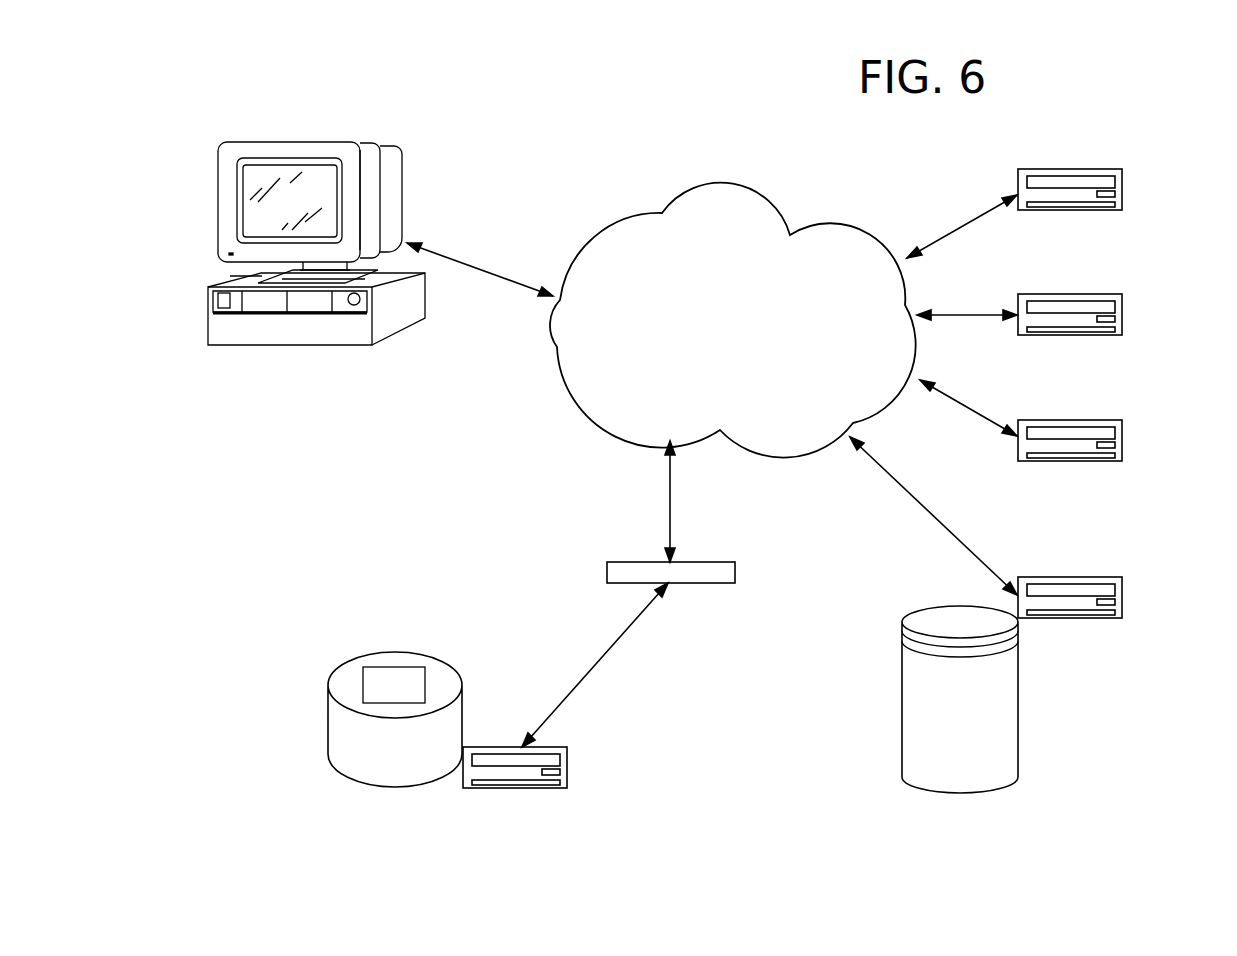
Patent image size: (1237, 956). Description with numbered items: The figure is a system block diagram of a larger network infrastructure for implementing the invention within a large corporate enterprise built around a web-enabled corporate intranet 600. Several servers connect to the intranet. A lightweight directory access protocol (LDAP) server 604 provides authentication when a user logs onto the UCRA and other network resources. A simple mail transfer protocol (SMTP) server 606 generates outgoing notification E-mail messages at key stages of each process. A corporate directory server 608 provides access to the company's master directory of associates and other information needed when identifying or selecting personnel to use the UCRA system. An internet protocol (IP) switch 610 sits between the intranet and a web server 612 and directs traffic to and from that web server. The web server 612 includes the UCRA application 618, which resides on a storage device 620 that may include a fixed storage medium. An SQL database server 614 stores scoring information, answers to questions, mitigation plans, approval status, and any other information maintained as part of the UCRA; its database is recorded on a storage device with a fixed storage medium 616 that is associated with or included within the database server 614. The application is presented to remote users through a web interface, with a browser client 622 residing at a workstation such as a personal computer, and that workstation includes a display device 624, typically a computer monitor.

The web-enabled corporate intranet 600 is at (683, 195).
The lightweight directory access protocol (LDAP) server 604 is at (1123, 182).
The simple mail transfer protocol (SMTP) server 606 is at (1123, 305).
The corporate directory server 608 is at (1123, 432).
The internet protocol (IP) switch 610 is at (725, 558).
The web server 612 is at (567, 763).
The SQL database server 614 is at (1123, 590).
The storage device with a fixed storage medium 616 is at (1018, 755).
The UCRA application 618 is at (394, 685).
The storage device 620 is at (340, 772).
The browser client 622 is at (238, 343).
The display device 624 is at (288, 142).